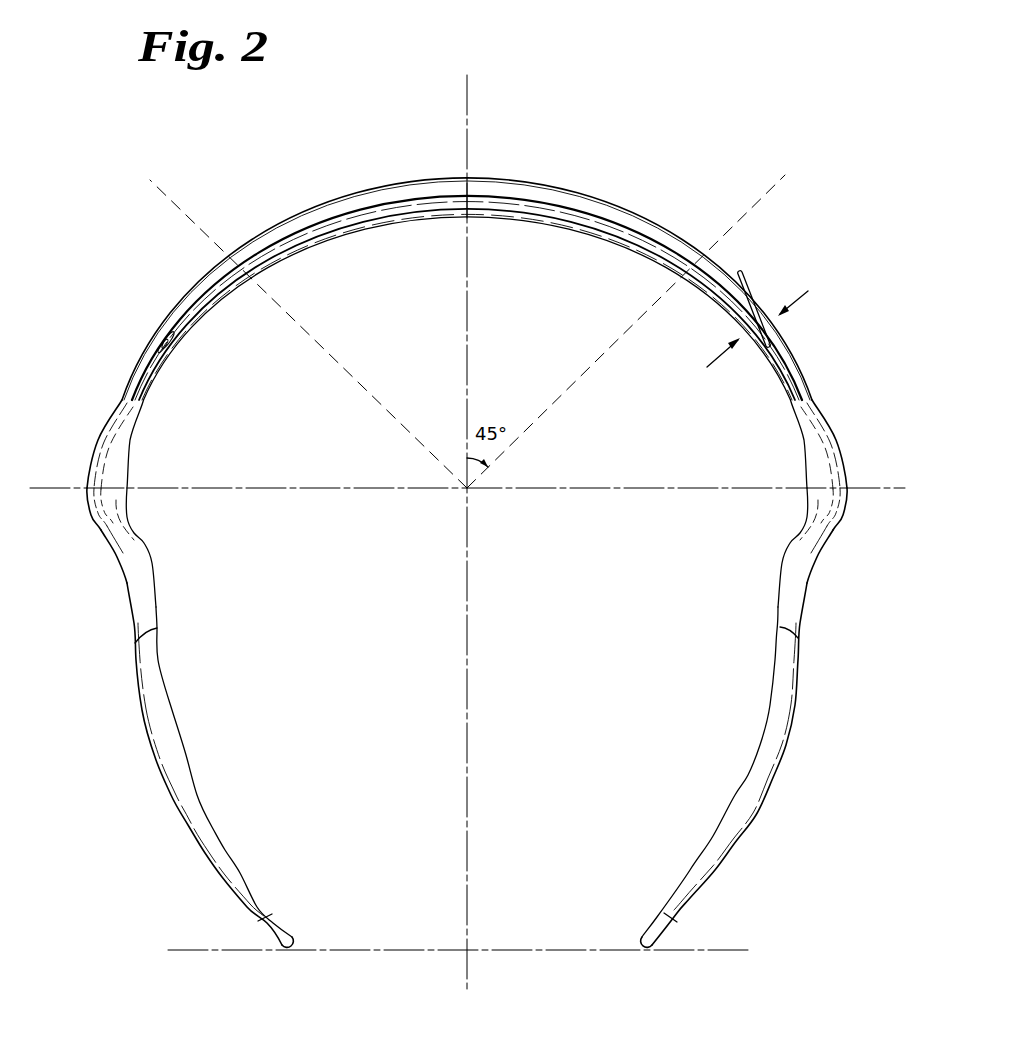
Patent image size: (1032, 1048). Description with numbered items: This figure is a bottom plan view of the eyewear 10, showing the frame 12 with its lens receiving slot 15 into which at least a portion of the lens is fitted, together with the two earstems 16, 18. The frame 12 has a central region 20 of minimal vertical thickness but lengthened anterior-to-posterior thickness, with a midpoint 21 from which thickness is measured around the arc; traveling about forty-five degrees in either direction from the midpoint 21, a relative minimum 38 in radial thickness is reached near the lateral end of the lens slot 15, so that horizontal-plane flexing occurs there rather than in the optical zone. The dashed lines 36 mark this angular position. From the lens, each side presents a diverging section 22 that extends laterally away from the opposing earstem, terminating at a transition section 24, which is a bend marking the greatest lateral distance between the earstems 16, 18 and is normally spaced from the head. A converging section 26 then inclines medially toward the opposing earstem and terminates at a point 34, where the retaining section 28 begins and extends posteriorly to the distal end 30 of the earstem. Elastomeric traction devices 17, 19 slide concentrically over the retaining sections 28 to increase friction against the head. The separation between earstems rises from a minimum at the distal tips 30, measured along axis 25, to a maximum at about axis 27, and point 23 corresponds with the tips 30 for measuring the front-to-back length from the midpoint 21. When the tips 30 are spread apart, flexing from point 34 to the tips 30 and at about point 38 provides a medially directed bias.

The eyewear 10 is at (458, 568).
The frame 12 is at (632, 218).
The lens receiving slot 15 is at (313, 235).
The earstem 16 is at (151, 764).
The elastomeric traction device 17 is at (769, 779).
The earstem 18 is at (772, 762).
The elastomeric traction device 19 is at (190, 828).
The central region 20 is at (526, 180).
The midpoint 21 is at (467, 180).
The diverging section 22 is at (105, 437).
The point 23 is at (467, 950).
The transition section 24 is at (86, 483).
The axis 25 is at (540, 950).
The converging section 26 is at (100, 537).
The axis 27 is at (550, 488).
The retaining section 28 is at (150, 610).
The distal end 30 is at (292, 950).
The point 34 is at (148, 553).
The 45 degree reference line 36 is at (177, 200).
The relative minimum 38 is at (792, 302).